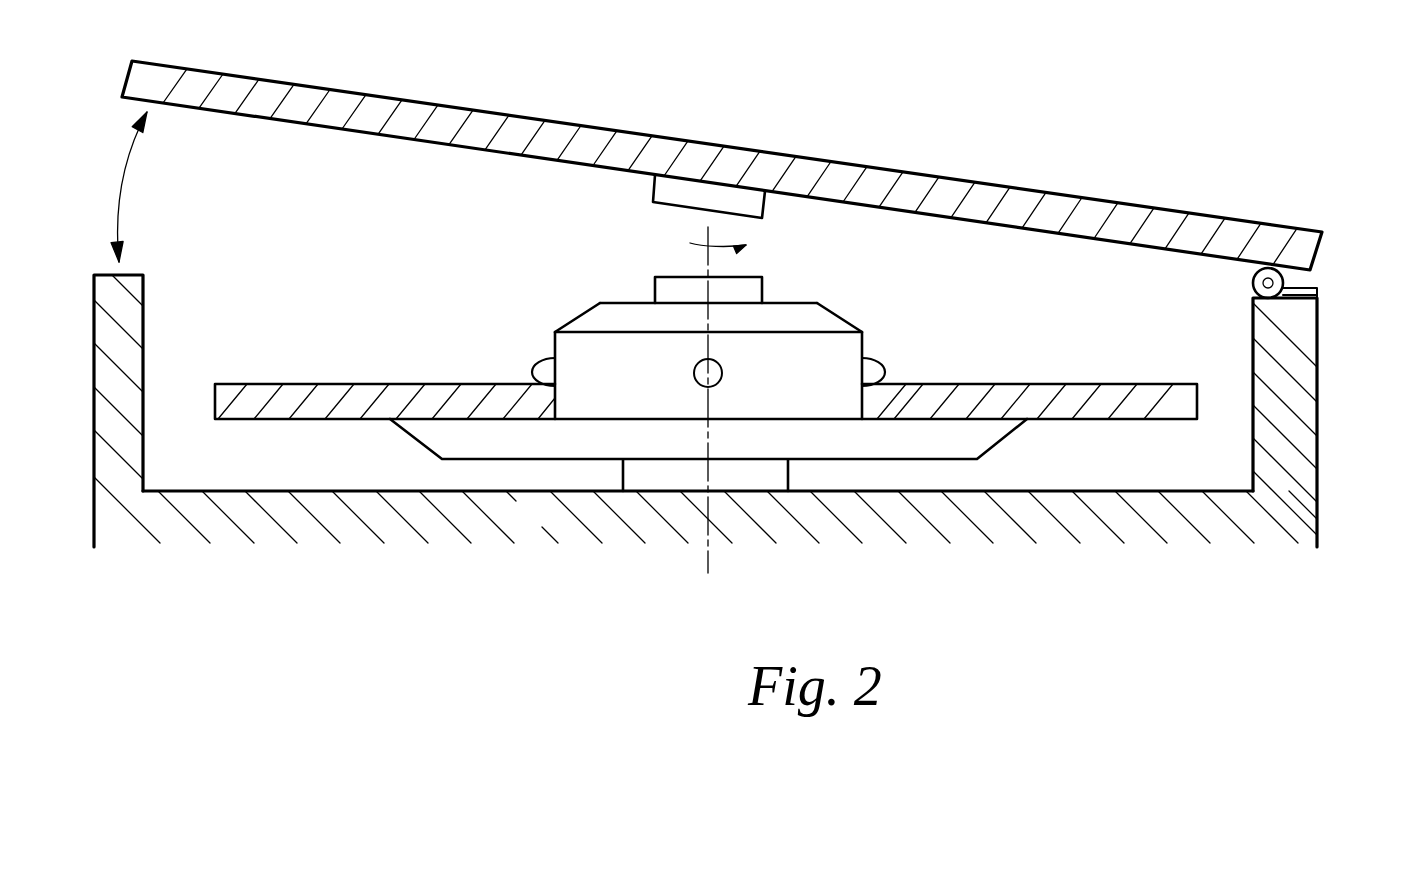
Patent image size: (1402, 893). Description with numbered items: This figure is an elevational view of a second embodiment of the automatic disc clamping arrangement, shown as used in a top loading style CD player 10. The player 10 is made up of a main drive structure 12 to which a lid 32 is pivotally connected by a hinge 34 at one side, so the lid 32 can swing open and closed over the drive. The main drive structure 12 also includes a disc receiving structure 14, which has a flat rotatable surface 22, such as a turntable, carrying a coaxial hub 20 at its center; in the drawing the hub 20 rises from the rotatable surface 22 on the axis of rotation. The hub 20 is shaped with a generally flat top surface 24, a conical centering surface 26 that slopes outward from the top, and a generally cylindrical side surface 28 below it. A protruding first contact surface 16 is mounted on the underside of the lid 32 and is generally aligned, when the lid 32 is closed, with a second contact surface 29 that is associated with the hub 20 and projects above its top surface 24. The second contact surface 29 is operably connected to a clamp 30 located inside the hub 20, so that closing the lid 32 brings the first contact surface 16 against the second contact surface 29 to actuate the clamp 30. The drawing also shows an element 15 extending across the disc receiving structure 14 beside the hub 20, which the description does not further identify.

The top loading style CD player 10 is at (788, 83).
The main drive structure 12 is at (730, 517).
The disc receiving structure 14 is at (1322, 375).
The tray 15 is at (327, 397).
The first contact surface 16 is at (732, 200).
The hub 20 is at (563, 295).
The flat rotatable surface 22 is at (708, 455).
The flat top surface 24 is at (785, 302).
The conical centering surface 26 is at (843, 320).
The cylindrical side surface 28 is at (847, 348).
The second contact surface 29 is at (665, 287).
The clamp 30 is at (530, 360).
The lid 32 is at (490, 127).
The hinge 34 is at (1292, 283).